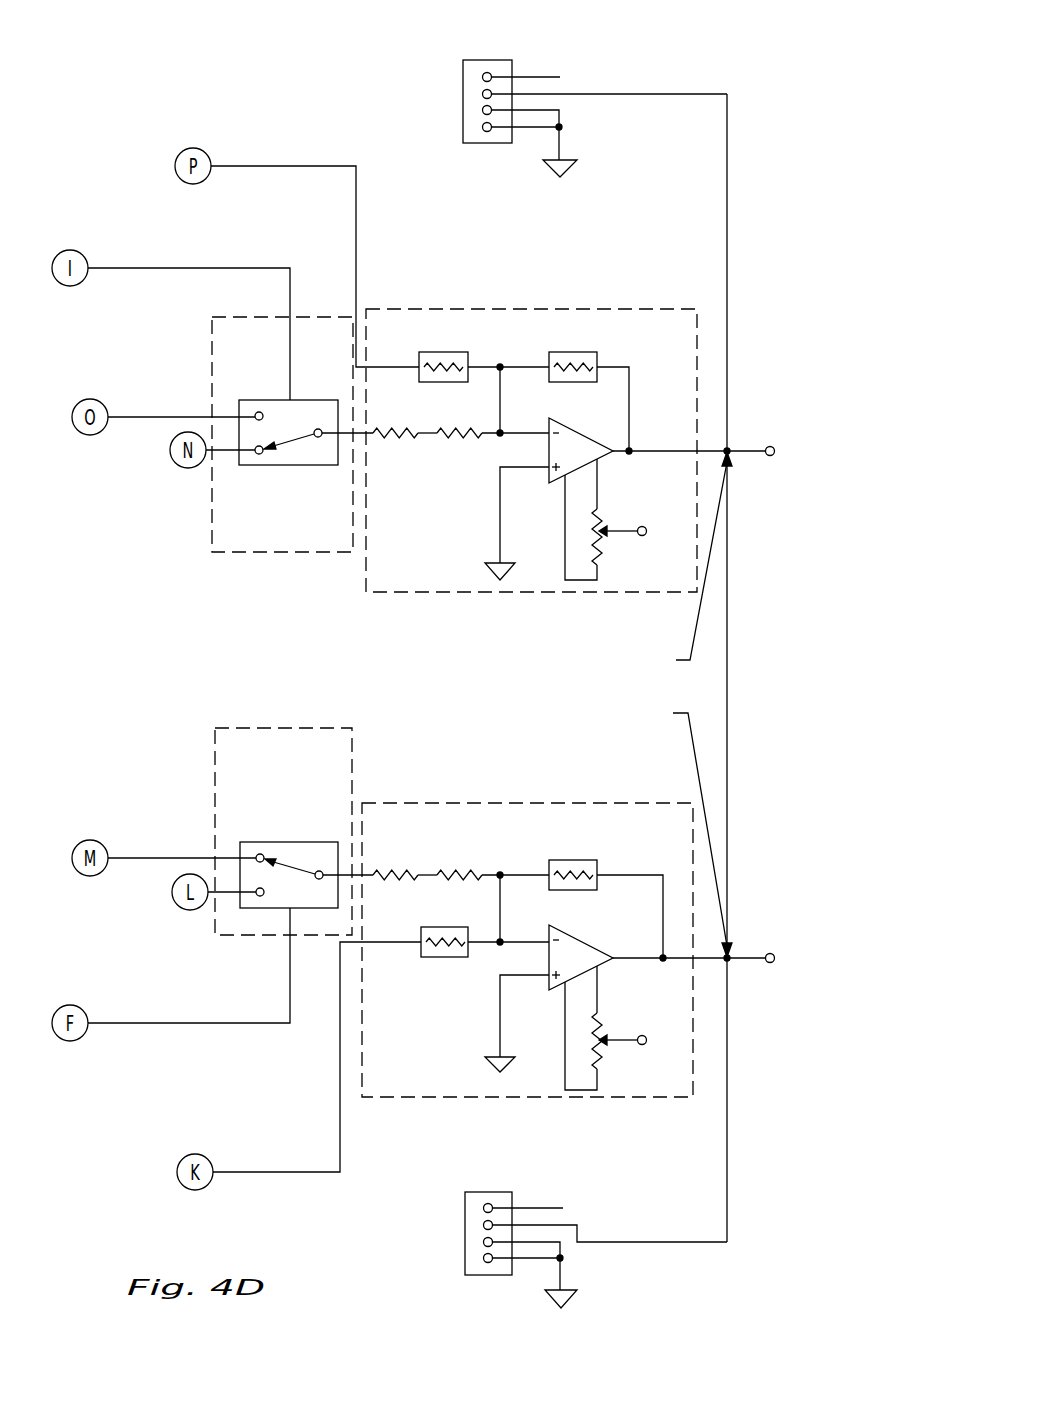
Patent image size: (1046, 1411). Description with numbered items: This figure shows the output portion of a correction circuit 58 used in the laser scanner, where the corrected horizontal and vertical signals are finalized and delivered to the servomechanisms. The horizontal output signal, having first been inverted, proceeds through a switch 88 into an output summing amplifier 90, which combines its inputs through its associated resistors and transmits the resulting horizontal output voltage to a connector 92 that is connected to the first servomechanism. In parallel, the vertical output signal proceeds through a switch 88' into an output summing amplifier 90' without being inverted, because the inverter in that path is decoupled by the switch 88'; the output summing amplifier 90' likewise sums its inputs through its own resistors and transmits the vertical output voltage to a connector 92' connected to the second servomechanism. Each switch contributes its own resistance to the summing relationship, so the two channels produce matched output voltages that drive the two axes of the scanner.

The correction circuit 58 is at (776, 147).
The connector 92' is at (542, 88).
The switch 88' is at (292, 466).
The output summing amplifier 90' is at (531, 422).
The switch 88 is at (282, 804).
The output summing amplifier 90 is at (527, 925).
The connector 92 is at (543, 1221).